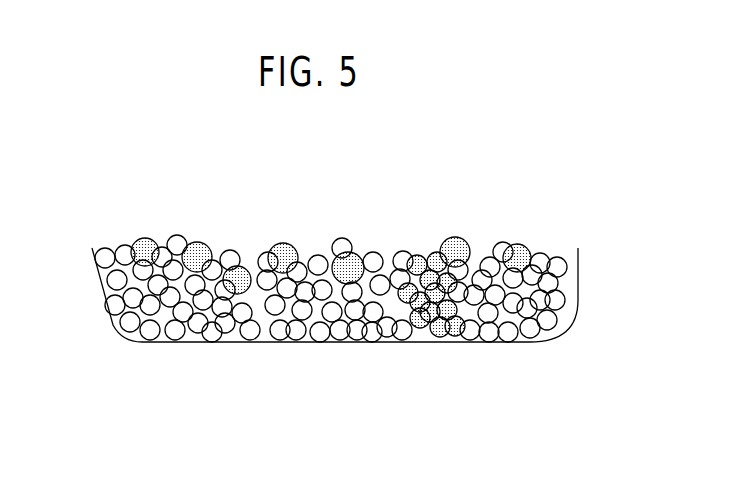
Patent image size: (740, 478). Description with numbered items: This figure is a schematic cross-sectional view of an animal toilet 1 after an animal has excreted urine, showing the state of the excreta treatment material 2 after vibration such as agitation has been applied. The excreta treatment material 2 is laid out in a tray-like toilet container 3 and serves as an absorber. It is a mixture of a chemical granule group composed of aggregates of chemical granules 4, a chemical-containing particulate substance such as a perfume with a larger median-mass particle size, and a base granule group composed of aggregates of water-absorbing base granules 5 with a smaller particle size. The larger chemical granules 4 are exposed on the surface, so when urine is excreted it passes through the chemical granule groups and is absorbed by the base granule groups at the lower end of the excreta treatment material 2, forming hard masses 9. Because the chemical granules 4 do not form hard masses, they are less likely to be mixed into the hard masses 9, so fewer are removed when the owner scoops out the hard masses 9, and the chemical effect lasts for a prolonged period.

The animal toilet 1 is at (593, 222).
The excreta treatment material 2 is at (403, 224).
The toilet container 3 is at (93, 262).
The chemical granules 4 is at (199, 255).
The base granules 5 is at (126, 257).
The hard masses 9 is at (413, 345).